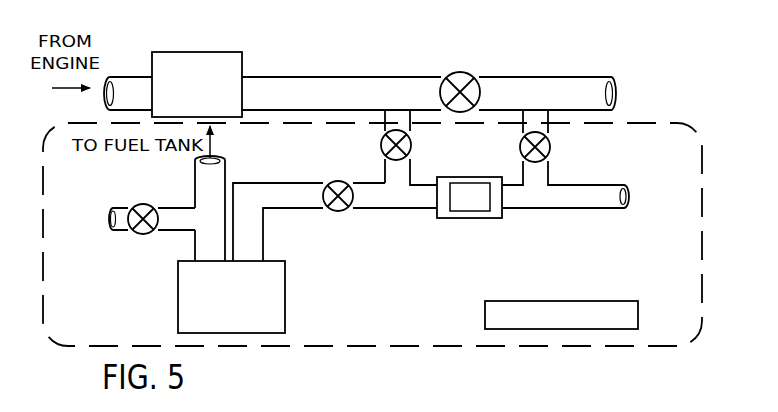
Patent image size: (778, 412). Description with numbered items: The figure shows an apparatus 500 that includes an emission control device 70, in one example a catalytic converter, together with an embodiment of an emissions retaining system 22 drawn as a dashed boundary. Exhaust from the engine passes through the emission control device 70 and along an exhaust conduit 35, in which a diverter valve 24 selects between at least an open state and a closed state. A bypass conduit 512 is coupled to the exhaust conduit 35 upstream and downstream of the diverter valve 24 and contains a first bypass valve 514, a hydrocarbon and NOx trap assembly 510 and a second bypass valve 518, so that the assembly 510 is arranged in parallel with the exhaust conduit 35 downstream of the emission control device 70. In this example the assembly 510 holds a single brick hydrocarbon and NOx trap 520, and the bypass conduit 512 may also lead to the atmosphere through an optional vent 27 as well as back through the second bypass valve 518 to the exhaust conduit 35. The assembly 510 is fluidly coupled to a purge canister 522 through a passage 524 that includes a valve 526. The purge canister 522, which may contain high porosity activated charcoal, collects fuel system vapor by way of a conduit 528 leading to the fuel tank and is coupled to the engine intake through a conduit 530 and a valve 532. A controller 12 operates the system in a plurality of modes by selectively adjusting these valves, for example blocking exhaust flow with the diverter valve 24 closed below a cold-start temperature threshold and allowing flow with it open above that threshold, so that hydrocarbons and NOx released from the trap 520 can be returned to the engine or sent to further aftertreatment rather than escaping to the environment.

The controller 12 is at (585, 301).
The emissions retaining system 22 is at (702, 180).
The diverter valve 24 is at (457, 73).
The vent 27 is at (585, 207).
The exhaust conduit 35 is at (318, 77).
The emission control device 70 is at (206, 93).
The apparatus 500 is at (669, 71).
The hydrocarbon and NOx trap assembly 510 is at (445, 219).
The bypass conduit 512 is at (506, 236).
The first bypass valve 514 is at (408, 150).
The second bypass valve 518 is at (520, 150).
The hydrocarbon and NOx trap 520 is at (491, 197).
The purge canister 522 is at (285, 310).
The passage 524 is at (297, 206).
The valve 526 is at (338, 182).
The conduit 528 is at (222, 199).
The conduit 530 is at (190, 229).
The valve 532 is at (143, 204).